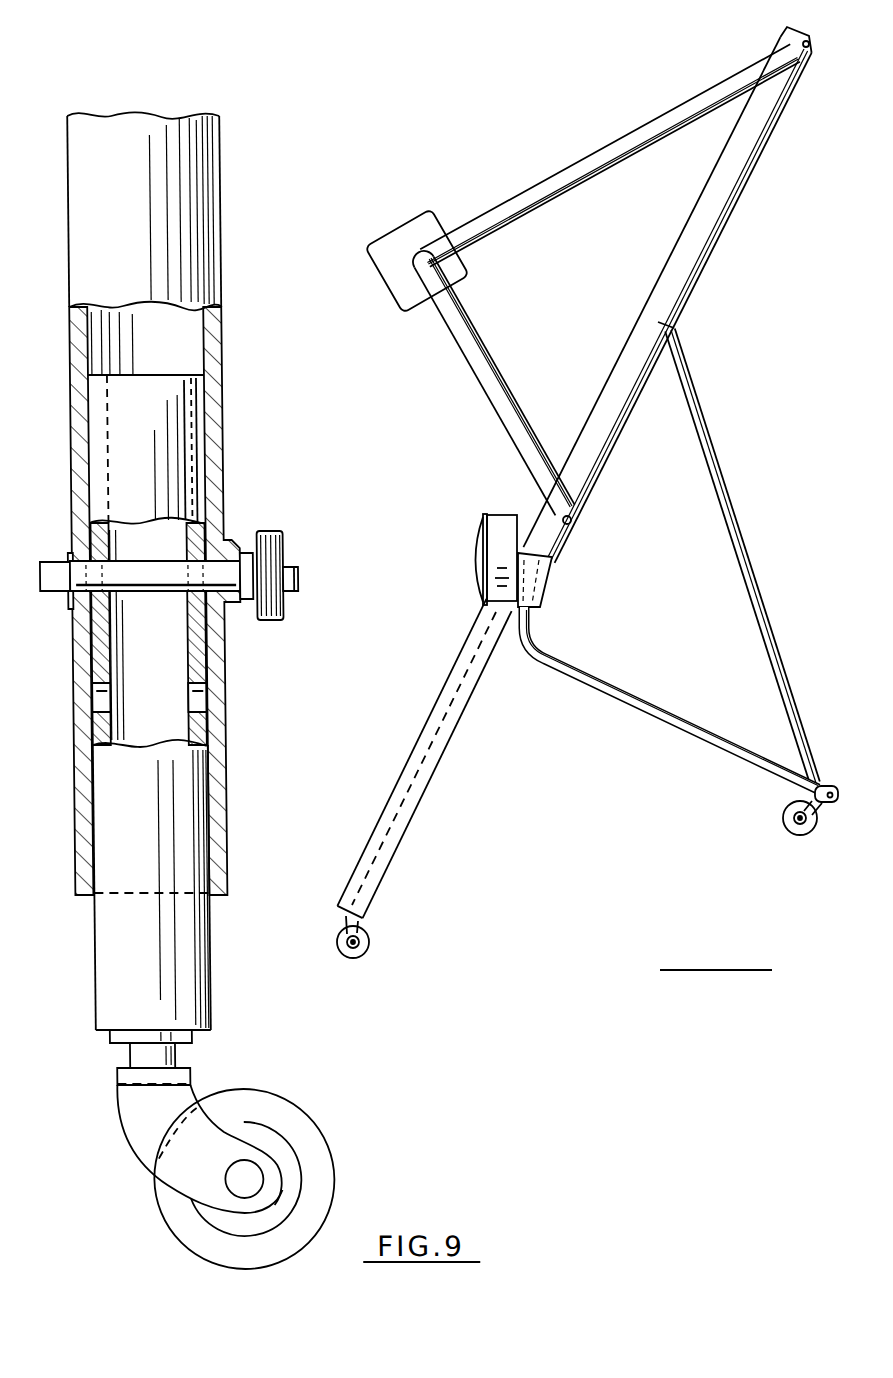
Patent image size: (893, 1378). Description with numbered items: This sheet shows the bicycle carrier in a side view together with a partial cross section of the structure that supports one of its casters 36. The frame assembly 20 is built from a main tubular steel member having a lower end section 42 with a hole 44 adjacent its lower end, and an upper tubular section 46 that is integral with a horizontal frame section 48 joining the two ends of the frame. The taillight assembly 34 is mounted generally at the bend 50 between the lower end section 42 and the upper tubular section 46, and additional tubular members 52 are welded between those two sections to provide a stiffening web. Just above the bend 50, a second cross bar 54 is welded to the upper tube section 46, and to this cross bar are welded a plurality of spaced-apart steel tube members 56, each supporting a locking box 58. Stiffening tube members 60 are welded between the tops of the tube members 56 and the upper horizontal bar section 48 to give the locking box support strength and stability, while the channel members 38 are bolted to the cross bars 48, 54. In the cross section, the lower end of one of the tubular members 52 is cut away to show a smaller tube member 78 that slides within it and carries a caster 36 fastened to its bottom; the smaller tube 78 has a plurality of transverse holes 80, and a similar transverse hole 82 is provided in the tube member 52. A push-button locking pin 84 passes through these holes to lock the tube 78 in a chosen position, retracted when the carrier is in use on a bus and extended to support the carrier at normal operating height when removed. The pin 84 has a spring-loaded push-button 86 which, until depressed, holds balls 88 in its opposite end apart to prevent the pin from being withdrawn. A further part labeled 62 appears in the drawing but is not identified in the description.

In FIG. 3, the frame assembly 20 is at (530, 156).
In FIG. 3, the taillight assembly 34 is at (478, 548).
In FIG. 9, the caster 36 is at (306, 1152).
In FIG. 3, the caster 36 is at (370, 940).
In FIG. 3, the channel member 38 is at (424, 758).
In FIG. 3, the lower end section 42 is at (683, 733).
In FIG. 3, the hole 44 is at (826, 789).
In FIG. 3, the upper tubular section 46 is at (708, 256).
In FIG. 3, the horizontal frame section 48 is at (809, 45).
In FIG. 3, the bend 50 is at (530, 633).
In FIG. 3, the tubular member 52 is at (732, 522).
In FIG. 3, the second cross bar 54 is at (574, 518).
In FIG. 3, the steel tube member 56 is at (487, 368).
In FIG. 3, the locking box 58 is at (413, 228).
In FIG. 3, the stiffening tube member 60 is at (605, 155).
In FIG. 9, the telescoping inner tube 62 is at (120, 135).
In FIG. 3, the telescoping inner tube 62 is at (436, 740).
In FIG. 9, the smaller tube member 78 is at (100, 977).
In FIG. 9, the transverse holes 80 is at (90, 467).
In FIG. 9, the transverse hole 82 is at (152, 594).
In FIG. 9, the push-button locking pin 84 is at (266, 532).
In FIG. 9, the spring-loaded push-button 86 is at (294, 590).
In FIG. 9, the balls 88 is at (60, 558).